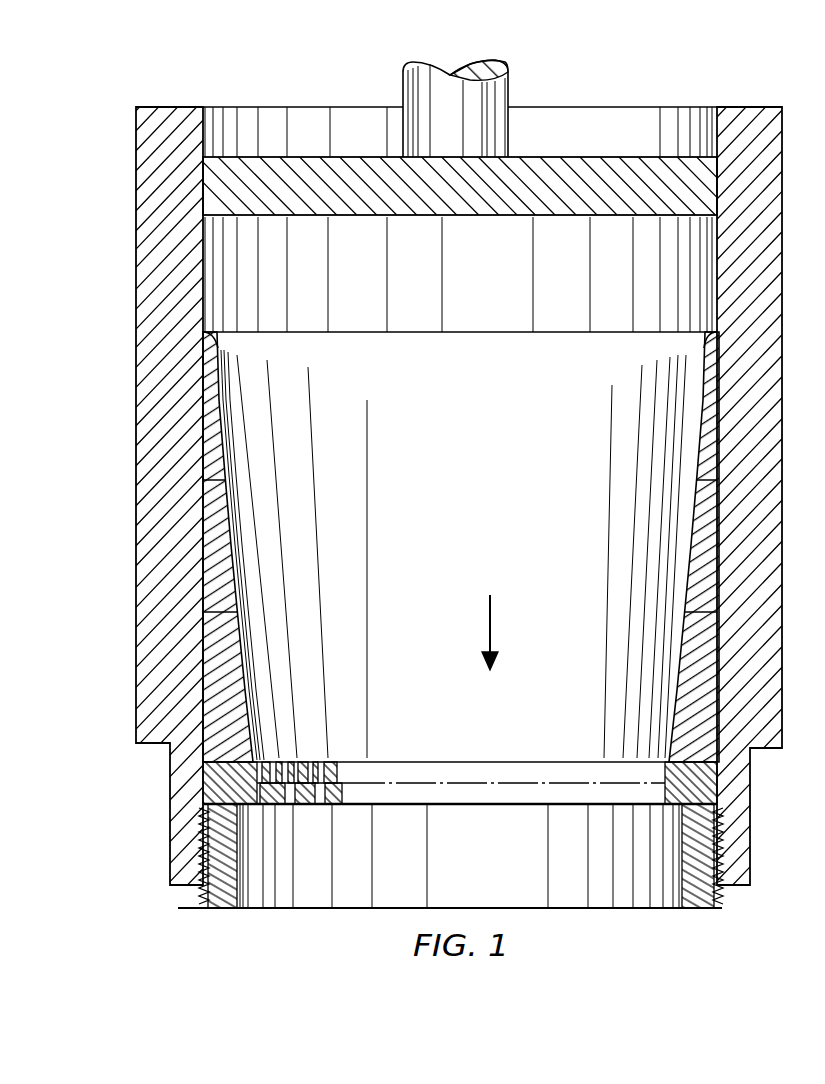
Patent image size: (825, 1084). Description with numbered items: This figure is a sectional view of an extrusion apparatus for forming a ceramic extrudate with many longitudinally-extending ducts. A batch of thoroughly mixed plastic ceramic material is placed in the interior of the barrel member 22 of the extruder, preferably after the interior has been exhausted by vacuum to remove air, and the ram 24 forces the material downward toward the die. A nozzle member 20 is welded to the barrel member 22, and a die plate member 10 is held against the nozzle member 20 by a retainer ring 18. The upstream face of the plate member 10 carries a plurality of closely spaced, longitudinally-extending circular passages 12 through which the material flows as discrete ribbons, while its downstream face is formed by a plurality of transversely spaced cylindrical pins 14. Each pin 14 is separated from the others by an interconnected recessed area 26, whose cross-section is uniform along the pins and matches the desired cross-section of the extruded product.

The die plate member 10 is at (457, 814).
The circular passages 12 is at (316, 778).
The cylindrical pins 14 is at (300, 792).
The retainer ring 18 is at (240, 880).
The nozzle member 20 is at (252, 685).
The barrel member 22 is at (782, 450).
The ram 24 is at (590, 157).
The recessed area 26 is at (262, 806).